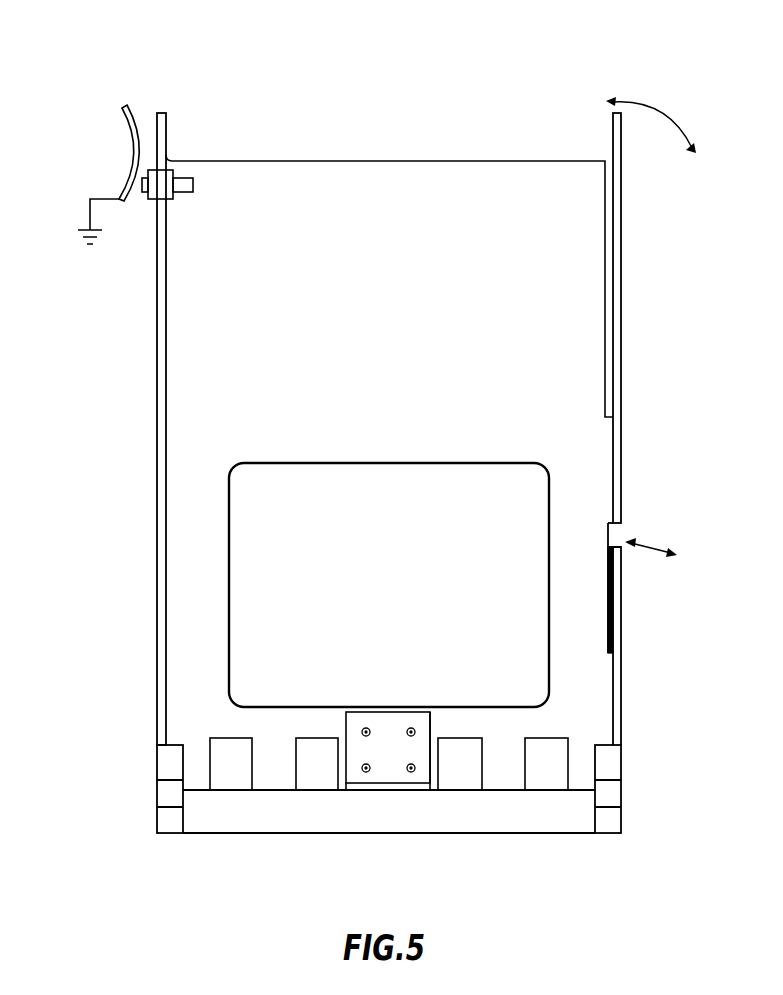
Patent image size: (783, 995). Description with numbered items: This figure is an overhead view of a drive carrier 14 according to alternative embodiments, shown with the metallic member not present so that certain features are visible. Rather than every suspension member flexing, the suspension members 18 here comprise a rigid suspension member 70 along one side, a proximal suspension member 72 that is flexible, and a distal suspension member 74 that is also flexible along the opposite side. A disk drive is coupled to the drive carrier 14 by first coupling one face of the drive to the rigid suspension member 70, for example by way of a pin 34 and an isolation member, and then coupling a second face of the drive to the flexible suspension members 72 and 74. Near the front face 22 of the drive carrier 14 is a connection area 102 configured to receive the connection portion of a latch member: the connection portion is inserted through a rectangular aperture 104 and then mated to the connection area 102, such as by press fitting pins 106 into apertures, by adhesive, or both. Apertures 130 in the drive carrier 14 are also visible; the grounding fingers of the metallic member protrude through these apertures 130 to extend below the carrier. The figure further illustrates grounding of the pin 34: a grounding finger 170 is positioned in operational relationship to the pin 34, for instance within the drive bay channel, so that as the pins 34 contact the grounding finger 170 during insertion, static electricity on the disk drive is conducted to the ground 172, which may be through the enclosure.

The drive carrier 14 is at (352, 846).
The suspension members 18 is at (157, 388).
The front face 22 is at (542, 833).
The pin 34 is at (183, 177).
The rigid suspension member 70 is at (166, 313).
The proximal suspension member 72 is at (621, 582).
The distal suspension member 74 is at (621, 278).
The connection area 102 is at (358, 720).
The rectangular aperture 104 is at (433, 730).
The pins 106 is at (410, 763).
The apertures 130 is at (238, 777).
The grounding finger 170 is at (135, 112).
The ground 172 is at (92, 247).